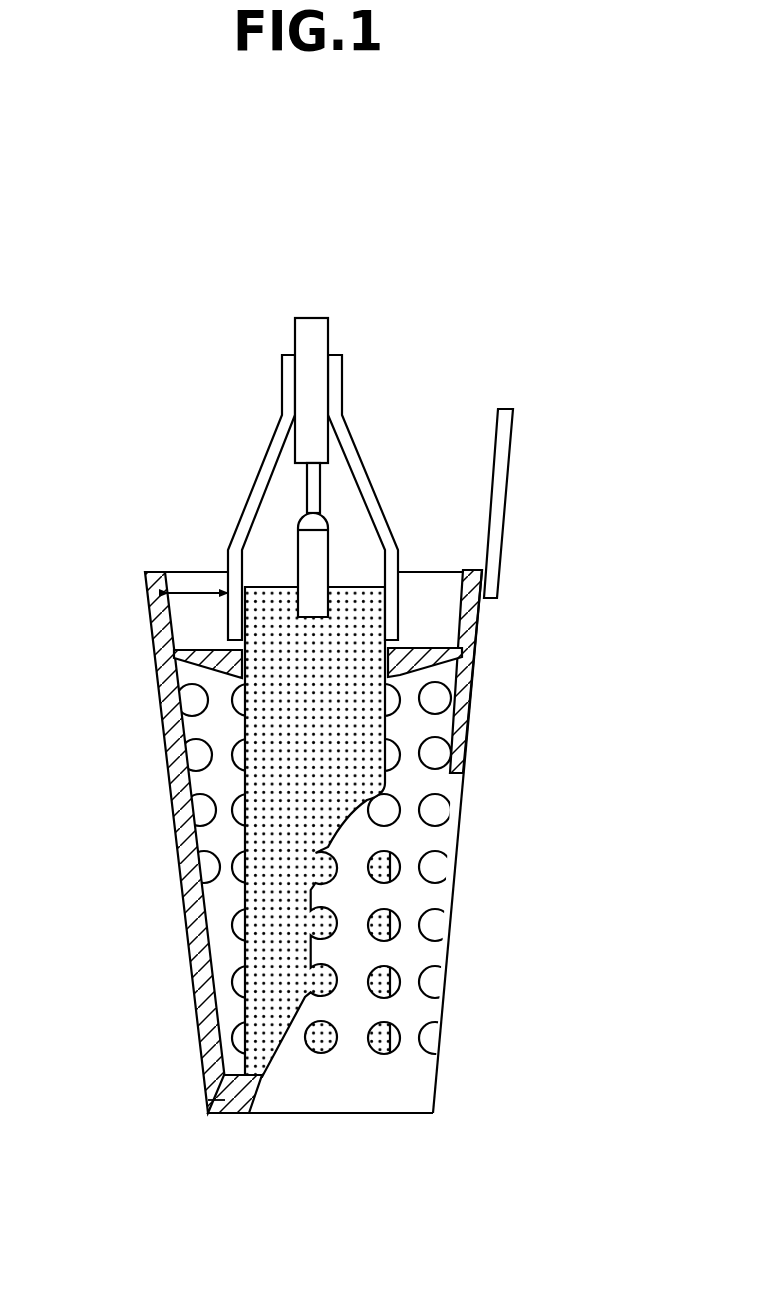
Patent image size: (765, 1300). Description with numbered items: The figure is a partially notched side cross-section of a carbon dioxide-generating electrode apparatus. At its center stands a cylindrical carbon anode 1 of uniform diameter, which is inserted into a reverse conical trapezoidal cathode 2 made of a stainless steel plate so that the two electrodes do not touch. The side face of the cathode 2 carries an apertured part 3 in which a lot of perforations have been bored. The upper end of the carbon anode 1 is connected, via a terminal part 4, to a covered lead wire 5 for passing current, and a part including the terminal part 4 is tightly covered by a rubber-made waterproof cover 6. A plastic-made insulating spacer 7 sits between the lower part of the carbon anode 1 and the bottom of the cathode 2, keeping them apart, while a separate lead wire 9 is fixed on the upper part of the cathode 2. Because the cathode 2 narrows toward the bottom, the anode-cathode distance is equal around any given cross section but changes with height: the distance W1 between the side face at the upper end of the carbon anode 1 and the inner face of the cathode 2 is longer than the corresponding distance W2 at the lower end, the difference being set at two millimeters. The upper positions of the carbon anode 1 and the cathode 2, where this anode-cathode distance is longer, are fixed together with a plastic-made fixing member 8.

The carbon anode 1 is at (365, 777).
The cathode 2 is at (437, 838).
The apertured part 3 is at (390, 923).
The terminal part 4 is at (303, 557).
The covered lead wire 5 is at (320, 333).
The waterproof cover 6 is at (350, 445).
The insulating spacer 7 is at (243, 1115).
The fixing member 8 is at (447, 657).
The lead wire 9 is at (507, 440).
The distance between upper anode side face and cathode inner face W1 is at (195, 590).
The distance between lower anode side face and cathode inner face W2 is at (210, 1100).